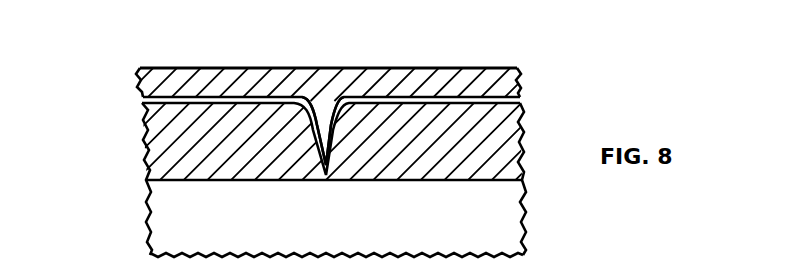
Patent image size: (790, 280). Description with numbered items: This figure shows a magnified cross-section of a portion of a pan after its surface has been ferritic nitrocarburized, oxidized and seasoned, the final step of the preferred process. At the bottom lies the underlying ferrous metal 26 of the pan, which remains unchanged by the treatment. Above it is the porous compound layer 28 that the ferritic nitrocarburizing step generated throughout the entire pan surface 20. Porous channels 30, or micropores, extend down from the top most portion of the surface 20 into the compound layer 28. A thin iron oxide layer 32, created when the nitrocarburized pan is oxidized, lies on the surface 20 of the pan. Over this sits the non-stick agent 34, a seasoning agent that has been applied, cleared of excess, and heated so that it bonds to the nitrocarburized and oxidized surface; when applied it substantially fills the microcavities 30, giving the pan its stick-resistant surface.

The pan surface 20 is at (485, 95).
The underlying ferrous metal 26 is at (167, 218).
The porous compound layer 28 is at (180, 145).
The porous channels 30 is at (322, 103).
The iron oxide layer 32 is at (250, 78).
The non-stick agent 34 is at (218, 82).